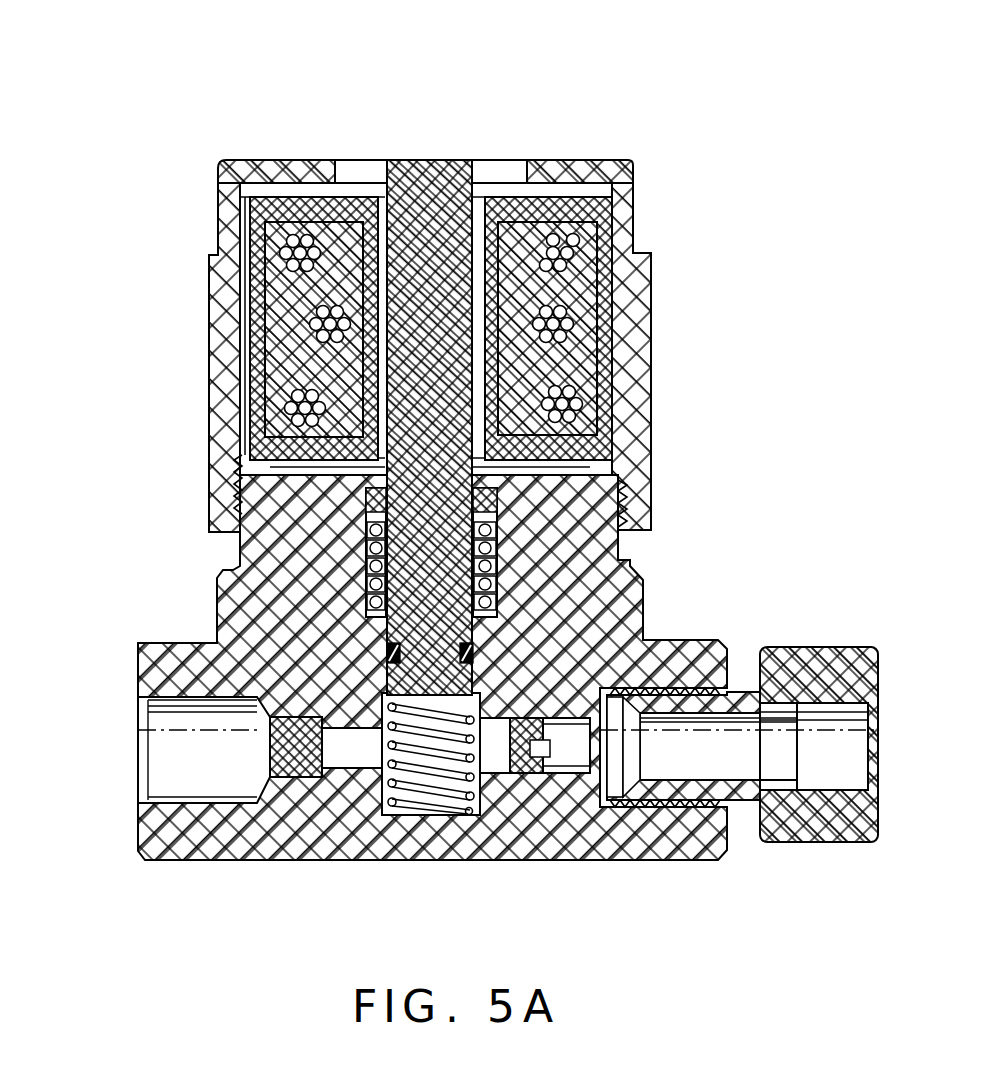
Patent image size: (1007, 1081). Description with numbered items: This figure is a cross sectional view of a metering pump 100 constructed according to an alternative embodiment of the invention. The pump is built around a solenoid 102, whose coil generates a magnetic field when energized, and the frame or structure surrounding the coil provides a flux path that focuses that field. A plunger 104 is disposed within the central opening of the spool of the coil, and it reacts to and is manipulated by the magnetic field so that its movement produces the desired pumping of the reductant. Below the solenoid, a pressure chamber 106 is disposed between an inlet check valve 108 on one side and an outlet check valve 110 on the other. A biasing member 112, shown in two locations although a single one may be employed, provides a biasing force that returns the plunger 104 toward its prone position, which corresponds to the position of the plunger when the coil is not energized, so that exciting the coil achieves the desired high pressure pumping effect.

The metering pump 100 is at (454, 474).
The solenoid 102 is at (268, 272).
The plunger 104 is at (455, 178).
The pressure chamber 106 is at (479, 806).
The inlet check valve 108 is at (273, 742).
The outlet check valve 110 is at (643, 640).
The biasing member 112 is at (367, 582).